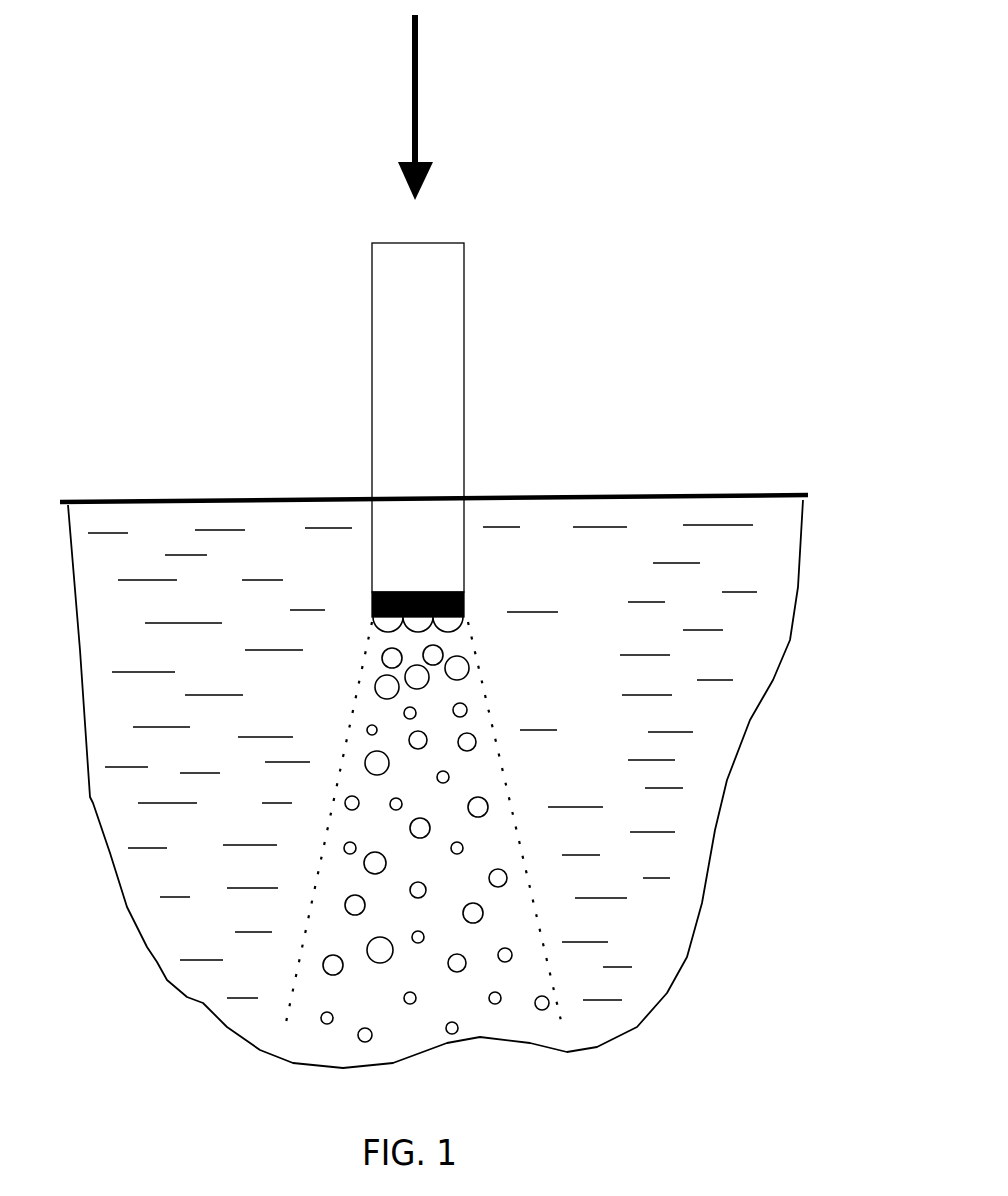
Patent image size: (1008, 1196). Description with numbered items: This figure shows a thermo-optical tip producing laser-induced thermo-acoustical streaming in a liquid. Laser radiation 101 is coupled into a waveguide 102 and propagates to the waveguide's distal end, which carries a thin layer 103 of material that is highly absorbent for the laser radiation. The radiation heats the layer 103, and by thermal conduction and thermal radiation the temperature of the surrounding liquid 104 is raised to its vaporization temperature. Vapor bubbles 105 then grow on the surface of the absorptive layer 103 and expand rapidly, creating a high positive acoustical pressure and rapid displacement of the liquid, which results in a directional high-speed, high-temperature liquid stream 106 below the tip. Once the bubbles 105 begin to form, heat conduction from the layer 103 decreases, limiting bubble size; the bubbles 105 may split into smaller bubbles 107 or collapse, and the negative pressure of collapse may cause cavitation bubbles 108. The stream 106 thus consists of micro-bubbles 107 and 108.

The laser radiation 101 is at (419, 88).
The waveguide 102 is at (465, 333).
The thin layer of highly absorbent material 103 is at (468, 602).
The surrounding liquid 104 is at (758, 561).
The vapor bubbles 105 is at (468, 631).
The high-speed liquid stream 106 is at (469, 789).
The smaller bubbles 107 is at (473, 674).
The cavitation bubbles 108 is at (366, 725).